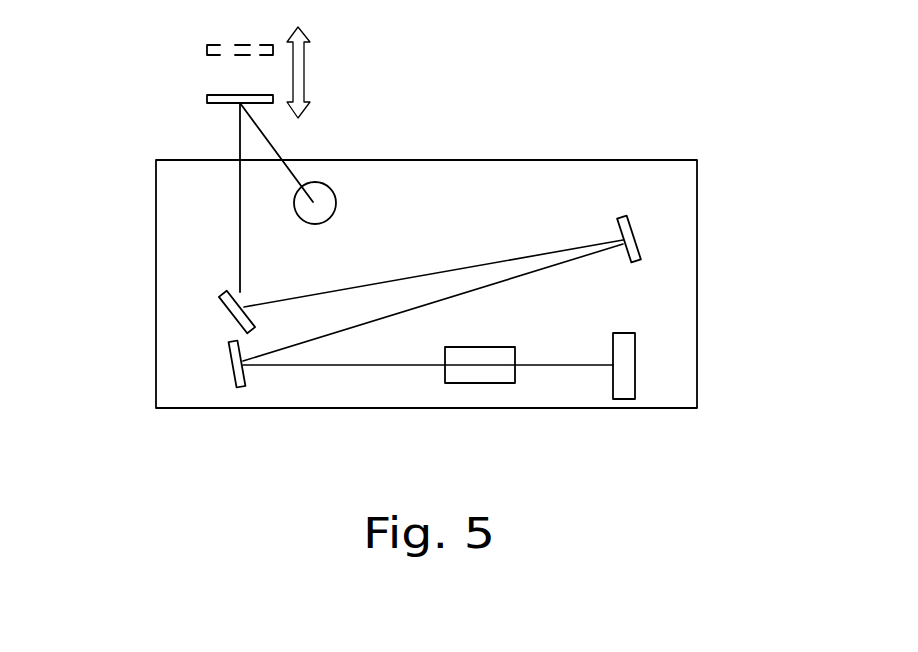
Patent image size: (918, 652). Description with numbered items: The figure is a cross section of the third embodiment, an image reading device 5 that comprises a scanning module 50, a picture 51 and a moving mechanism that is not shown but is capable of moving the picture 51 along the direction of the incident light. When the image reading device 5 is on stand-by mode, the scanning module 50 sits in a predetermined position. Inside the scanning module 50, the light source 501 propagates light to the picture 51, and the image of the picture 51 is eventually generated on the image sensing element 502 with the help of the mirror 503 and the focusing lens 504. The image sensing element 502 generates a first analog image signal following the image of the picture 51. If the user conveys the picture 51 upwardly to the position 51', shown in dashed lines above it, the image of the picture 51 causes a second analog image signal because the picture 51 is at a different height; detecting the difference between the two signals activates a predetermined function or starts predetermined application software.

The image reading device 5 is at (463, 118).
The scanning module 50 is at (552, 162).
The picture 51 is at (203, 72).
The position of the picture 51' is at (198, 27).
The light source 501 is at (324, 195).
The image sensing element 502 is at (625, 385).
The mirror 503 is at (222, 298).
The focusing lens 504 is at (477, 375).